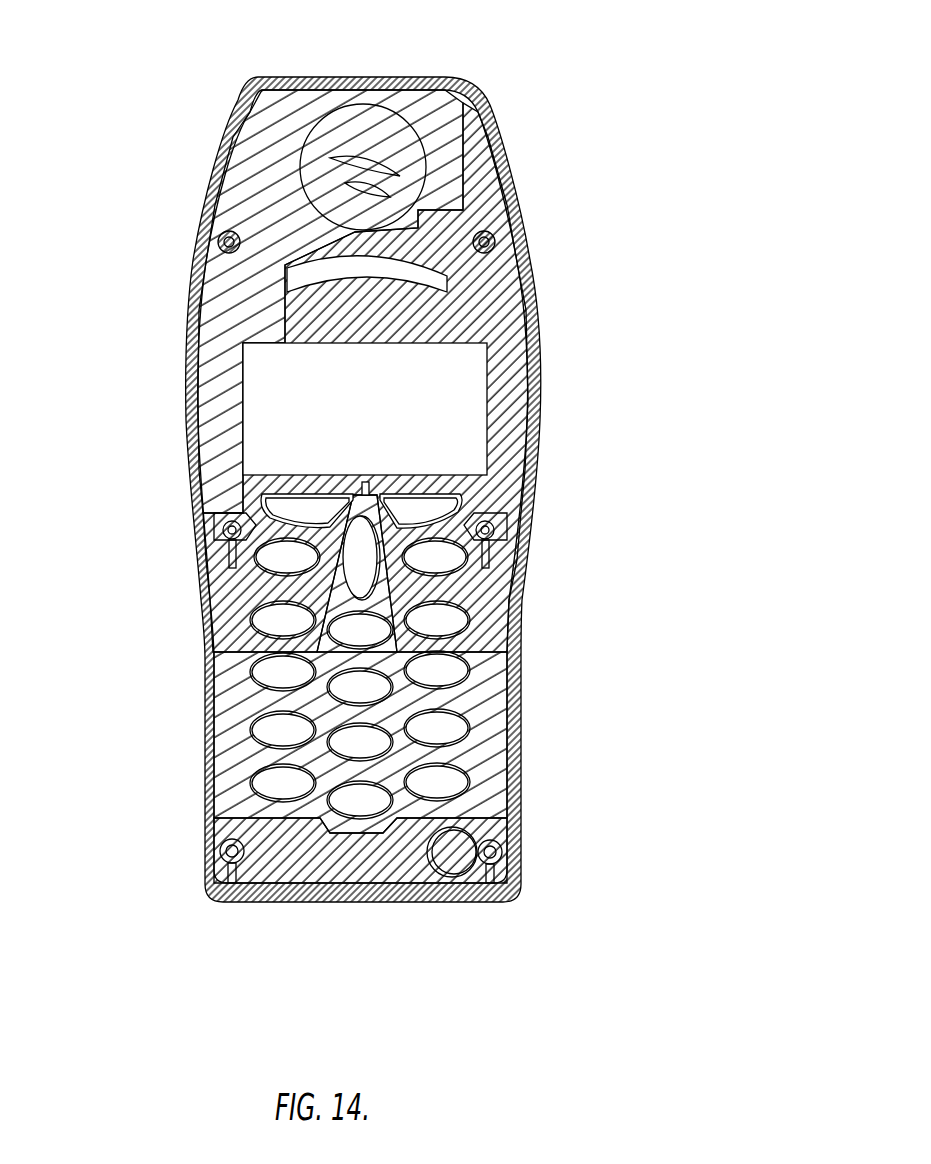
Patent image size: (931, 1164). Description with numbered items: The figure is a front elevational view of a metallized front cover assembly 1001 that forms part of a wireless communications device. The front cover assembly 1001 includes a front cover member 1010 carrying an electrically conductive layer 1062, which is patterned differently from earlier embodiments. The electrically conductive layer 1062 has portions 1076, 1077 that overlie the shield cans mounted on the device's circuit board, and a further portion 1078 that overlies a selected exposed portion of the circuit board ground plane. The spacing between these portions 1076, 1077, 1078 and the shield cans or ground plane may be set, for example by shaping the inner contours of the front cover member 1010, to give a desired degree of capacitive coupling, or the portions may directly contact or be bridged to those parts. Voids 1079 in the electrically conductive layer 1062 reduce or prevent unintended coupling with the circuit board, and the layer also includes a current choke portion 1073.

The front cover assembly 1001 is at (643, 320).
The front cover member 1010 is at (523, 493).
The electrically conductive layer 1062 is at (283, 822).
The current choke portion 1073 is at (330, 598).
The portion overlying shield can 1076 is at (415, 105).
The portion overlying shield can 1077 is at (222, 300).
The portion overlying ground plane portion 1078 is at (237, 753).
The voids 1079 is at (485, 295).